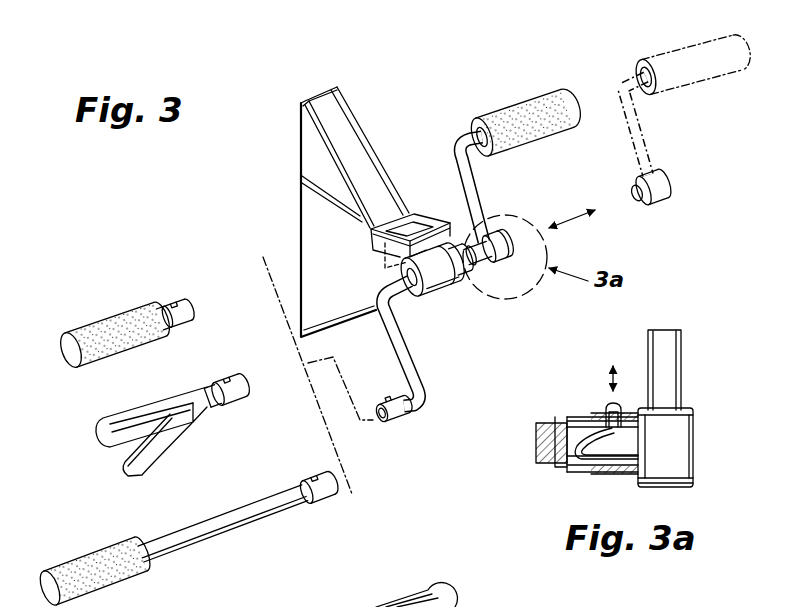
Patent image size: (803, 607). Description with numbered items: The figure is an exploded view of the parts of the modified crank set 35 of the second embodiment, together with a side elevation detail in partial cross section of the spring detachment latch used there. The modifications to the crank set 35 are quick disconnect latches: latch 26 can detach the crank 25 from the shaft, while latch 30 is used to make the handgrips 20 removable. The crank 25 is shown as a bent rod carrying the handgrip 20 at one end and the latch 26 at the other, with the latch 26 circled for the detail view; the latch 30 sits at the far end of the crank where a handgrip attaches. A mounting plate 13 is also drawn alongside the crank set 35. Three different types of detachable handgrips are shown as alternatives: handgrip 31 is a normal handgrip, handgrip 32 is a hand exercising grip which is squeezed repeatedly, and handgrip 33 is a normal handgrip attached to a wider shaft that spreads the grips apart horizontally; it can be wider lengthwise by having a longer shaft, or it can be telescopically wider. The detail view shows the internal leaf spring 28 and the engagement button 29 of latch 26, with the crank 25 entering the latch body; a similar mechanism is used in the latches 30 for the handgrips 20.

In FIG. 3, the mounting plate 13 is at (313, 155).
In FIG. 3, the handgrips 20 is at (511, 108).
In FIG. 3, the crank 25 is at (483, 198).
In FIG. 3A, the crank 25 is at (673, 368).
In FIG. 3, the quick disconnect latch 26 is at (507, 248).
In FIG. 3A, the quick disconnect latch 26 is at (687, 453).
In FIG. 3A, the internal leaf spring 28 is at (586, 433).
In FIG. 3A, the engagement button 29 is at (608, 403).
In FIG. 3, the quick disconnect latch 30 is at (386, 425).
In FIG. 3, the normal handgrip 31 is at (112, 312).
In FIG. 3, the hand exercising grip 32 is at (182, 388).
In FIG. 3, the normal handgrip attached to a wider shaft 33 is at (207, 517).
In FIG. 3, the modified crank set 35 is at (435, 304).